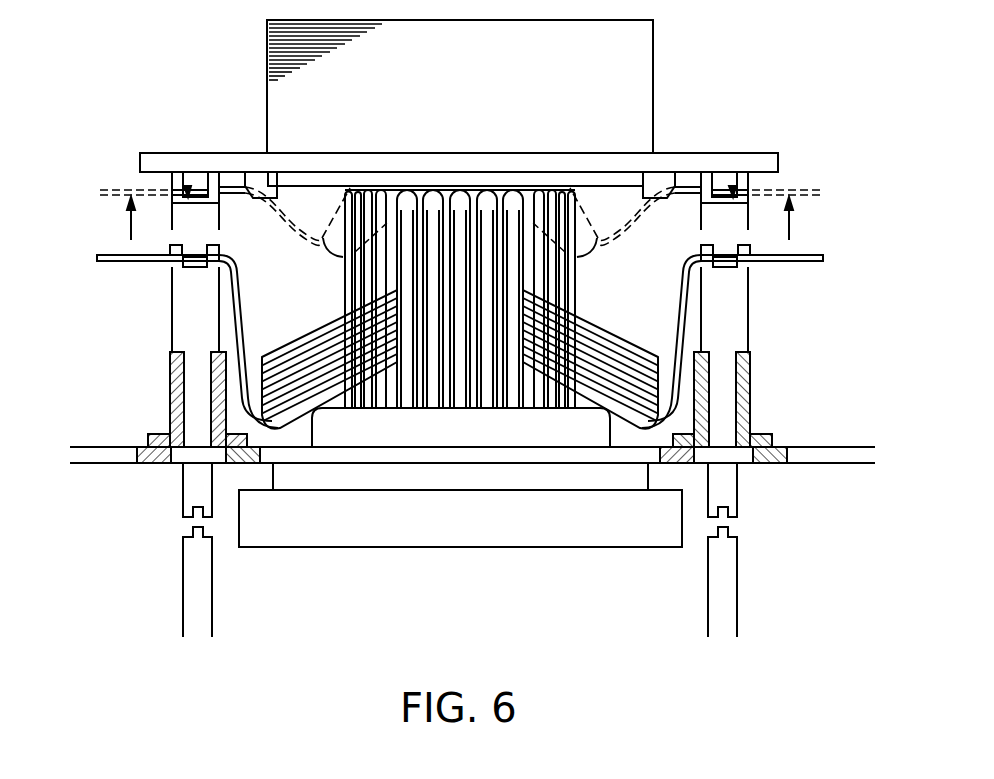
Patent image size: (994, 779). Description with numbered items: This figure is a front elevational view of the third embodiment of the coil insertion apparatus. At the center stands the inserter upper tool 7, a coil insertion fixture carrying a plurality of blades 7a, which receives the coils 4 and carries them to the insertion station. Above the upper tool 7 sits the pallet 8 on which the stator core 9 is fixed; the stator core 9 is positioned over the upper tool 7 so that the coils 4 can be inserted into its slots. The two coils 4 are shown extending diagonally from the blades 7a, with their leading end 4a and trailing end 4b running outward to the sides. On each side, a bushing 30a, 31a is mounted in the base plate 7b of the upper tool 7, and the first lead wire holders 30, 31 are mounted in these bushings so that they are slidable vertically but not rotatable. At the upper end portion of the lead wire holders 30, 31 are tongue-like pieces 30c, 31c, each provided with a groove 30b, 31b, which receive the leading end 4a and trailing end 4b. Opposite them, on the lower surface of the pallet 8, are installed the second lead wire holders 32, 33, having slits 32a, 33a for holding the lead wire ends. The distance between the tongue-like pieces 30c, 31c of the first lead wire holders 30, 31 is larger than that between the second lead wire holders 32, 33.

The coils 4 is at (303, 347).
The leading end 4a is at (805, 254).
The trailing end 4b is at (115, 256).
The upper tool 7 is at (332, 312).
The blades 7a is at (350, 288).
The base plate 7b is at (827, 453).
The pallet 8 is at (742, 160).
The stator core 9 is at (645, 62).
The first lead wire holder 30 is at (728, 317).
The bushing 30a is at (752, 393).
The groove 30b is at (742, 268).
The tongue-like piece 30c is at (700, 244).
The first lead wire holder 31 is at (173, 332).
The bushing 31a is at (172, 388).
The groove 31b is at (172, 275).
The tongue-like piece 31c is at (218, 246).
The second lead wire holder 32 is at (737, 185).
The slit 32a is at (728, 184).
The second lead wire holder 33 is at (187, 188).
The slit 33a is at (193, 188).